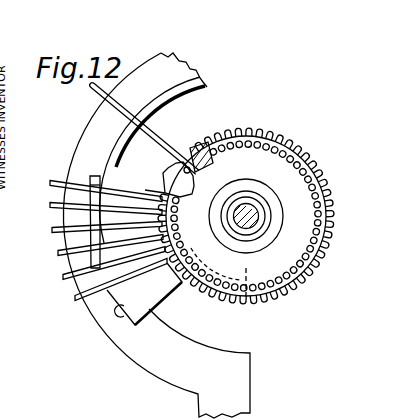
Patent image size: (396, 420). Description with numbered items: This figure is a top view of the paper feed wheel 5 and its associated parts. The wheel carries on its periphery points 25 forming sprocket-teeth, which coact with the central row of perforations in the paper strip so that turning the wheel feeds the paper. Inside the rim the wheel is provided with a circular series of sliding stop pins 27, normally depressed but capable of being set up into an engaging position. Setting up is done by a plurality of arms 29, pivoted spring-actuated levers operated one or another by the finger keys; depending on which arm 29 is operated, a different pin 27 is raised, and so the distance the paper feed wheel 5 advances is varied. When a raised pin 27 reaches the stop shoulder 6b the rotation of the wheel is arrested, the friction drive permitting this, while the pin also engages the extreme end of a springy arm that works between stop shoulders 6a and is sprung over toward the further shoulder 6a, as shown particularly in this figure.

The paper feed wheel 5 is at (322, 191).
The stop shoulders 6a is at (144, 130).
The stop shoulder 6b is at (215, 194).
The points 25 is at (322, 262).
The sliding stop pins 27 is at (273, 144).
The arms 29 is at (66, 208).